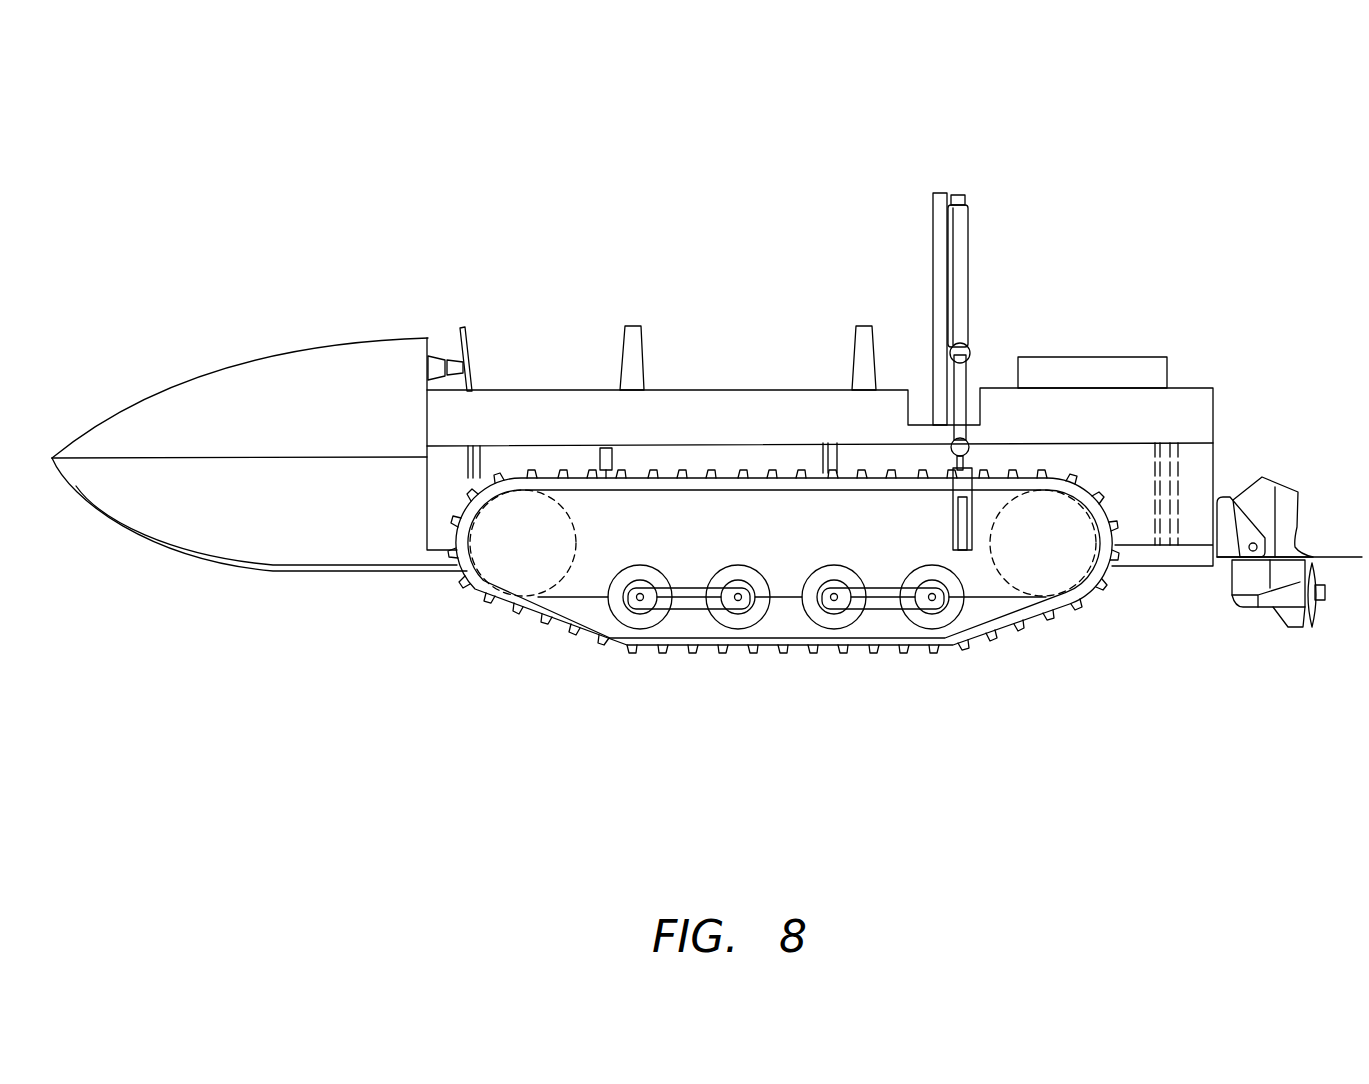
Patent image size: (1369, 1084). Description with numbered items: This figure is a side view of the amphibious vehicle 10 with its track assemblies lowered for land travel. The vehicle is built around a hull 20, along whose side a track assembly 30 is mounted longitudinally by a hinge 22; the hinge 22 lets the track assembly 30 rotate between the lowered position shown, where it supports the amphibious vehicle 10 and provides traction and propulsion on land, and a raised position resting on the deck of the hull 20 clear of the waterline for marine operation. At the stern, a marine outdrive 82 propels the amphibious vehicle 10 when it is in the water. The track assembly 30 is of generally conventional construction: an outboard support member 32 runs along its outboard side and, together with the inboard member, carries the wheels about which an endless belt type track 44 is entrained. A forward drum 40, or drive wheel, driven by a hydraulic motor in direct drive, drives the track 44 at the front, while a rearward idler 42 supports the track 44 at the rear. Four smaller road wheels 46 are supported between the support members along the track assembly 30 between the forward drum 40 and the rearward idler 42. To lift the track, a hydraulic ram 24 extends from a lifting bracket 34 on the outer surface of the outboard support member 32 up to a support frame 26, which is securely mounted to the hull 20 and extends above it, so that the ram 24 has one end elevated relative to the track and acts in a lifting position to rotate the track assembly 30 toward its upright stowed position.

The amphibious vehicle 10 is at (1238, 140).
The hull 20 is at (278, 576).
The hinge 22 is at (605, 467).
The hydraulic ram 24 is at (970, 258).
The support frame 26 is at (940, 190).
The track assembly 30 is at (784, 634).
The outboard support member 32 is at (572, 623).
The lifting bracket 34 is at (953, 522).
The forward drum 40 is at (485, 600).
The rearward idler 42 is at (1086, 605).
The track 44 is at (1012, 640).
The road wheels 46 is at (712, 625).
The marine outdrive 82 is at (1296, 468).